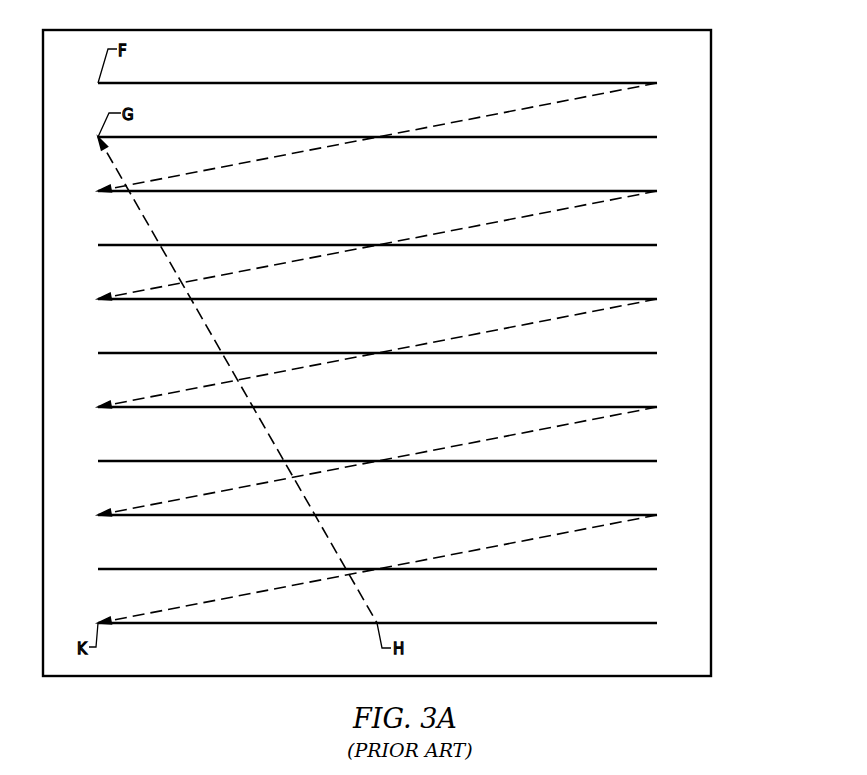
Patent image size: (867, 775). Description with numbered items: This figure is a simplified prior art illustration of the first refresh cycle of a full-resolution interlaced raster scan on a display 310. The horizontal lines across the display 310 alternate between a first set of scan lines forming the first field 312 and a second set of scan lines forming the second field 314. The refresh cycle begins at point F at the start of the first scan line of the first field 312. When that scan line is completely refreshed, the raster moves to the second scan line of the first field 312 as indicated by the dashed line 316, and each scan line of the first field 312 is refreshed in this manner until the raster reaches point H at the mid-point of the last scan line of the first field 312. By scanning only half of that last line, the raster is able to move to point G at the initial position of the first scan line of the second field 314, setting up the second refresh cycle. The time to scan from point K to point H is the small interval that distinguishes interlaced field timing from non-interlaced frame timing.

The display 310 is at (238, 30).
The first set of scan lines (first field) 312 is at (660, 81).
The second set of scan lines (second field) 314 is at (660, 135).
The dashed line 316 is at (418, 125).